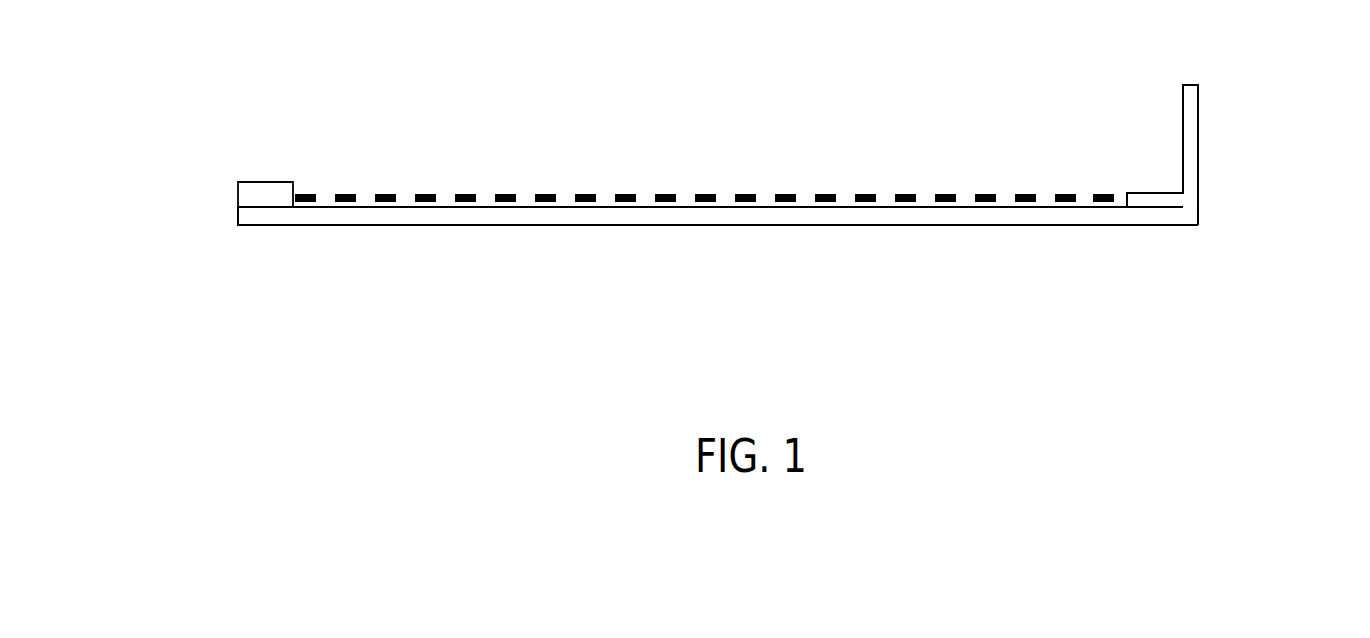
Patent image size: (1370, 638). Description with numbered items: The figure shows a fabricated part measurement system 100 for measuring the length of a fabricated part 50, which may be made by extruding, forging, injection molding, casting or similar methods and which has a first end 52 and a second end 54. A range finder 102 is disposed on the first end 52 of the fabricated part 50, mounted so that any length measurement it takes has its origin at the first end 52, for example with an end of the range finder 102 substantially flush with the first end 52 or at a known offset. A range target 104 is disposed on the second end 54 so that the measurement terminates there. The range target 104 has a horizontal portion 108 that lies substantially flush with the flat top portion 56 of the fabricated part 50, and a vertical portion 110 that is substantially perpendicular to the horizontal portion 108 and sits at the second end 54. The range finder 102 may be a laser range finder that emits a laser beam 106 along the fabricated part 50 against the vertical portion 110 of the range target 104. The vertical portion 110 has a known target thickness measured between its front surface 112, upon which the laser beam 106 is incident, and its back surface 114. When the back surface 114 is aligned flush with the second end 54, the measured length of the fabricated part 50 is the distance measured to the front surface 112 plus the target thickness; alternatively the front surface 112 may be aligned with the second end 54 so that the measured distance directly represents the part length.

The fabricated part measurement system 100 is at (461, 71).
The fabricated part 50 is at (752, 226).
The first end 52 is at (238, 214).
The second end 54 is at (1198, 213).
The top portion 56 is at (1003, 196).
The range finder 102 is at (238, 199).
The range target 104 is at (1257, 121).
The laser beam 106 is at (750, 193).
The horizontal portion 108 is at (1142, 193).
The vertical portion 110 is at (1198, 86).
The front surface 112 is at (1183, 115).
The back surface 114 is at (1198, 148).